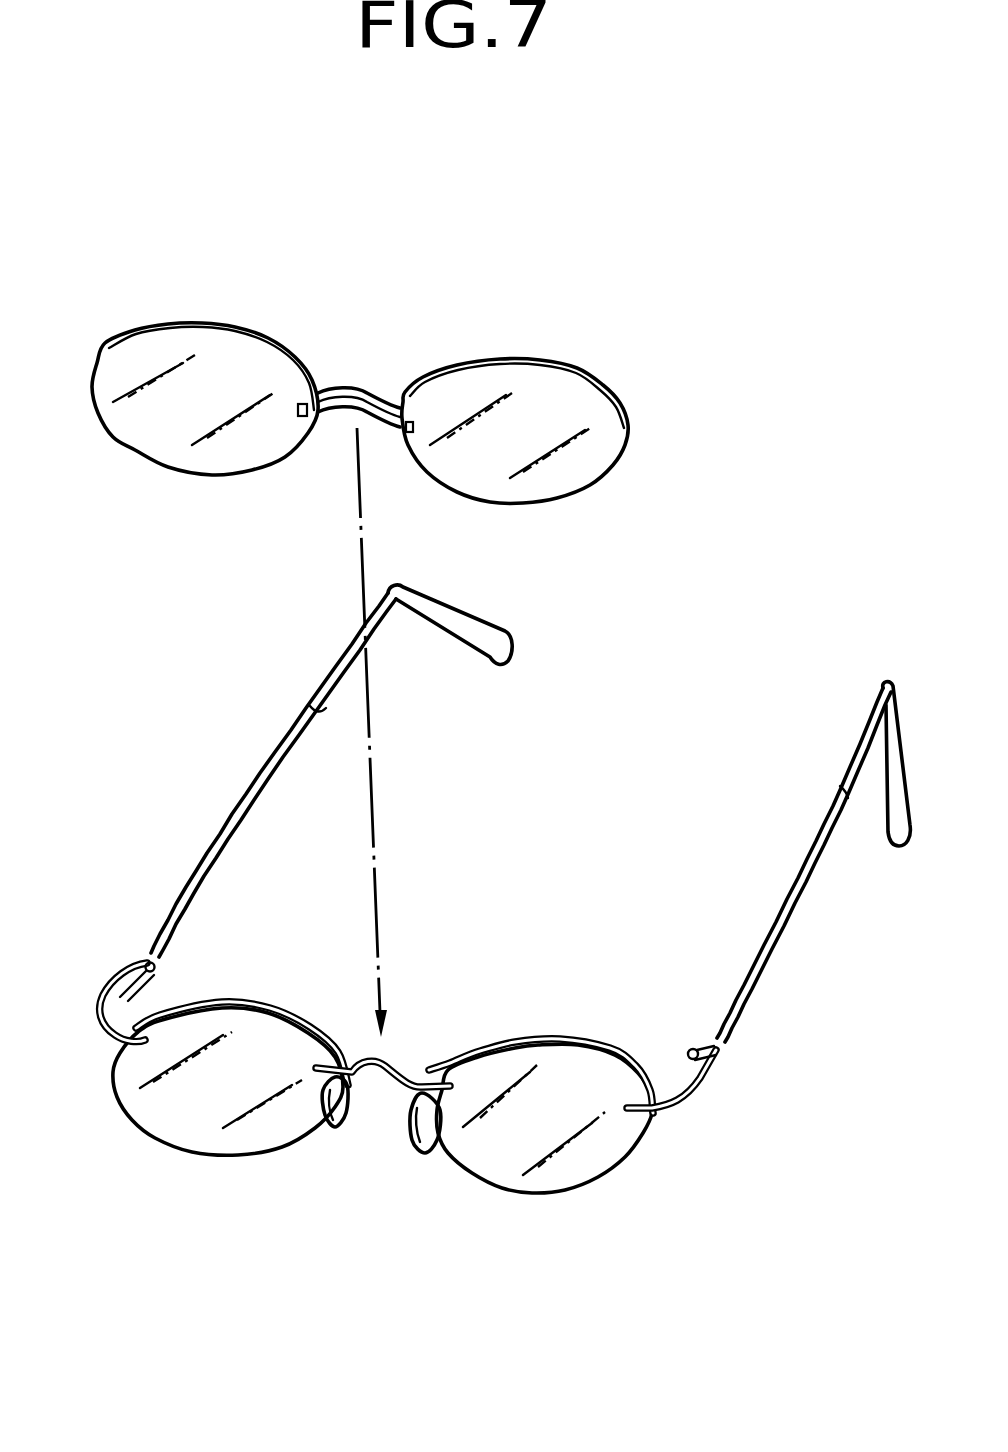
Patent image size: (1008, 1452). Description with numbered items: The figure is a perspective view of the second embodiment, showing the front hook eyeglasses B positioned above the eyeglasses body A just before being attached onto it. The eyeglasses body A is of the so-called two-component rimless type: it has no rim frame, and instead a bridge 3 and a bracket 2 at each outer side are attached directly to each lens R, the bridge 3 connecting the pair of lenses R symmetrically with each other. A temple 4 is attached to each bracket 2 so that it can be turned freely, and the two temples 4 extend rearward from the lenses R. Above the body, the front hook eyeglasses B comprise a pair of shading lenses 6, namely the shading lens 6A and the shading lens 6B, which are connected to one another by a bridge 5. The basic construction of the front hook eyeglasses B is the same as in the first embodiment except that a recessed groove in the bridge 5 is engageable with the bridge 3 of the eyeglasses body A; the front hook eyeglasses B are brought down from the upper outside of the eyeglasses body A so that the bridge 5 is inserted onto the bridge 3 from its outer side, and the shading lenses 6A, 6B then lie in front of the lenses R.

The eyeglasses body A is at (264, 1260).
The front hook eyeglasses B is at (600, 349).
The bracket 2 is at (689, 1103).
The bridge 3 is at (400, 1060).
The temple 4 is at (210, 842).
The lens R is at (525, 1187).
The bridge 5 is at (372, 390).
The shading lenses 6 is at (490, 236).
The shading lens 6A is at (273, 353).
The shading lens 6B is at (467, 378).